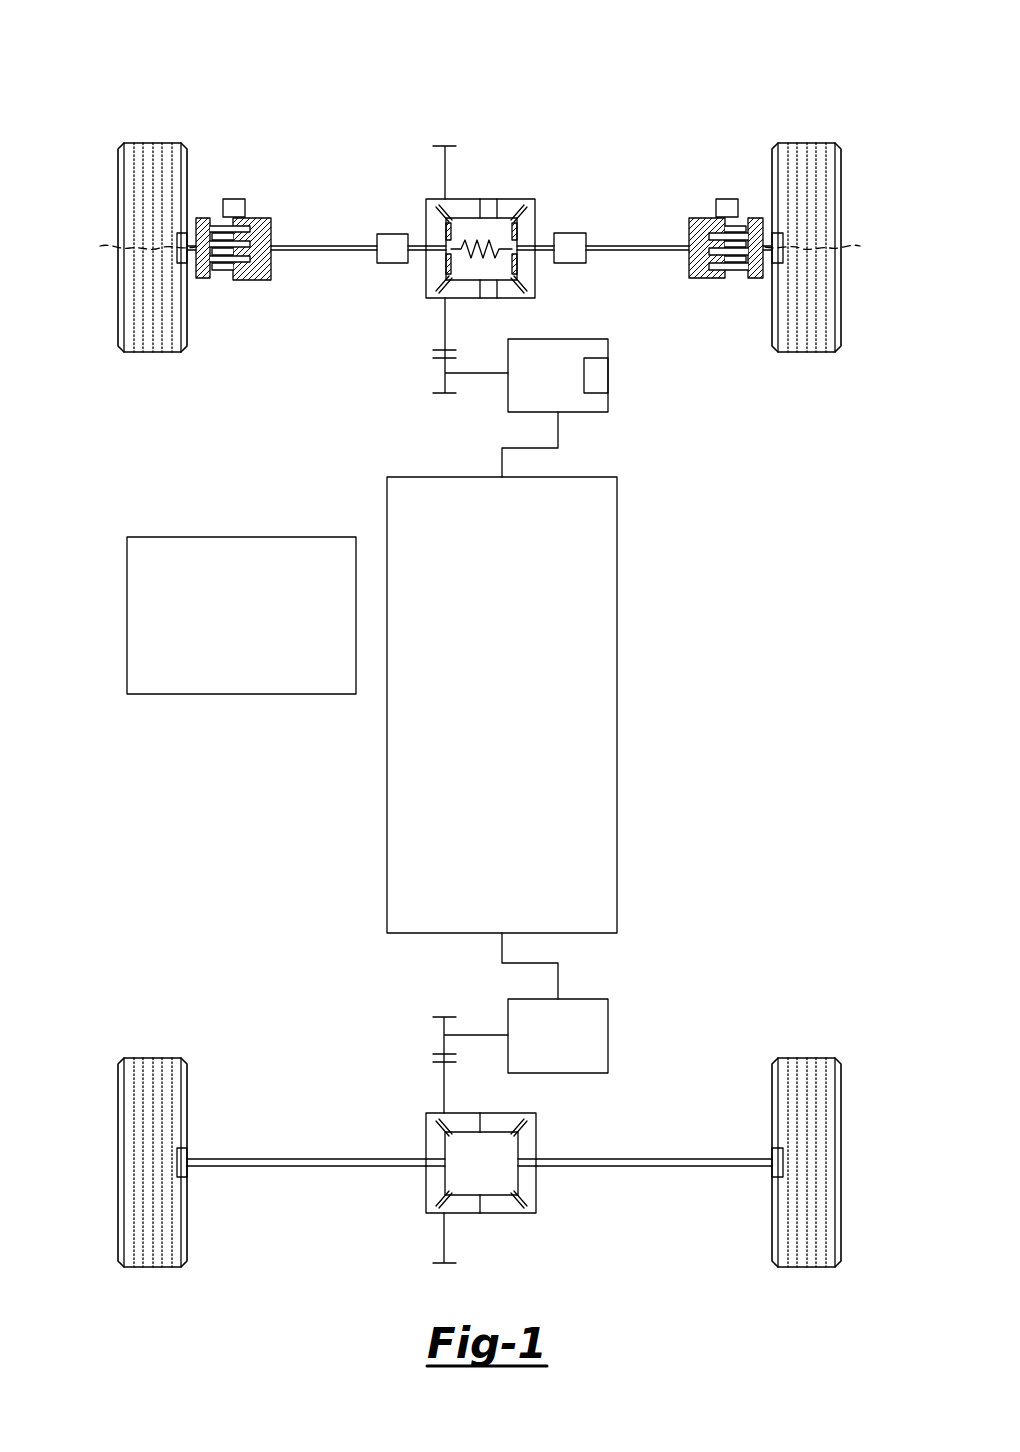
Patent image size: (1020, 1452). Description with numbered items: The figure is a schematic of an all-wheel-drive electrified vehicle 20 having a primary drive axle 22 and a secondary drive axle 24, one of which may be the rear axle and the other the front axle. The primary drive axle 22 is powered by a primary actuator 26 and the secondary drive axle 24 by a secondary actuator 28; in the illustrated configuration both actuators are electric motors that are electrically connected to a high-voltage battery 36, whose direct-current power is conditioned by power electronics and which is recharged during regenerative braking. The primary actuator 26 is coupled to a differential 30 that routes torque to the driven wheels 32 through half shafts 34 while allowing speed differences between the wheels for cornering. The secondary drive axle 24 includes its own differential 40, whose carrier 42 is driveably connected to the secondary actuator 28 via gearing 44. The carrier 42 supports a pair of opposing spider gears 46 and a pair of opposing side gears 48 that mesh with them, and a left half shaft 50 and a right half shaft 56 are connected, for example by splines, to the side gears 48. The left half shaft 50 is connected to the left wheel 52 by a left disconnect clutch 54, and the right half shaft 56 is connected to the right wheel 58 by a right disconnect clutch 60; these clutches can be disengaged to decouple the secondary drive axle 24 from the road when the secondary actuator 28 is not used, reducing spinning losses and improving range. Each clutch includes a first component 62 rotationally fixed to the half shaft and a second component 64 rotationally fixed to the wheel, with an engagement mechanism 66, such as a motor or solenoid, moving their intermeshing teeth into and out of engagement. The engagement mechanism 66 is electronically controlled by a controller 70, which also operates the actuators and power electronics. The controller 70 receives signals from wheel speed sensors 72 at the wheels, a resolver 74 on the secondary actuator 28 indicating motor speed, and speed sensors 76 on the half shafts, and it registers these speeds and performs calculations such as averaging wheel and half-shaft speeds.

The electrified vehicle 20 is at (705, 65).
The primary drive axle 22 is at (762, 1030).
The secondary drive axle 24 is at (655, 155).
The primary actuator 26 is at (608, 1035).
The secondary actuator 28 is at (583, 378).
The differential 30 is at (542, 1240).
The driven wheels 32 is at (152, 1267).
The half shafts 34 is at (330, 1159).
The high-voltage battery 36 is at (617, 705).
The differential 40 is at (492, 209).
The carrier 42 is at (540, 272).
The gearing 44 is at (445, 165).
The spider gears 46 is at (497, 199).
The side gears 48 is at (435, 263).
The left half shaft 50 is at (335, 246).
The left wheel 52 is at (152, 143).
The left disconnect clutch 54 is at (245, 237).
The right half shaft 56 is at (630, 246).
The right wheel 58 is at (808, 143).
The right disconnect clutch 60 is at (718, 160).
The first component 62 is at (260, 280).
The second component 64 is at (221, 280).
The engagement mechanism 66 is at (233, 199).
The controller 70 is at (127, 617).
The wheel speed sensors 72 is at (480, 246).
The resolver 74 is at (584, 375).
The speed sensor 76 is at (390, 234).